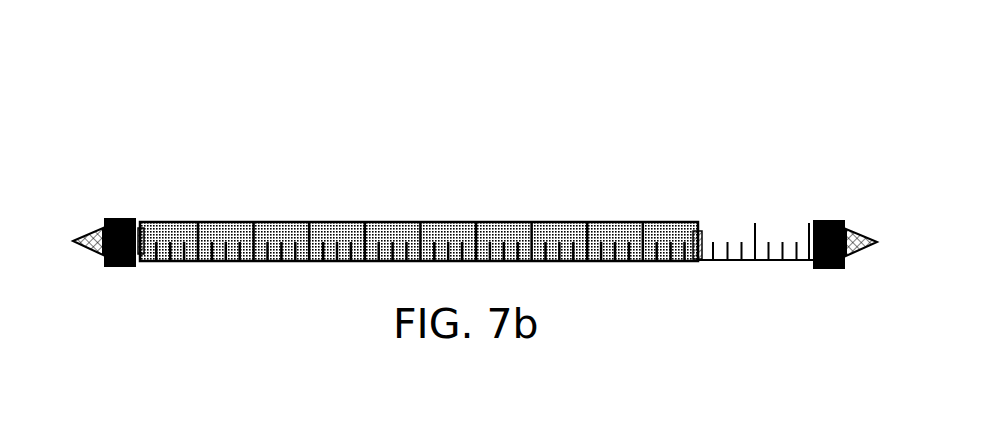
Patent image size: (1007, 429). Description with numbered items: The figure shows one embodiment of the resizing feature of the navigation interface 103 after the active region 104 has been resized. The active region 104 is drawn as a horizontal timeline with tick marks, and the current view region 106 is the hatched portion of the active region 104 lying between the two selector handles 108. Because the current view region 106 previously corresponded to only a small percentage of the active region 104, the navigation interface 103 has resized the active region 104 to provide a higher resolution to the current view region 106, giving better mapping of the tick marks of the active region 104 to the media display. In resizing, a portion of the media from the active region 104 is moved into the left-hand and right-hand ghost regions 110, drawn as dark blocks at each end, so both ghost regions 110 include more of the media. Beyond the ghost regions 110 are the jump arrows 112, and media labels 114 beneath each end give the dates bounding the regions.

The navigation interface 103 is at (140, 66).
The active region 104 is at (737, 259).
The current view region 106 is at (389, 222).
The selector handles 108 is at (150, 248).
The ghost regions 110 is at (118, 219).
The jump arrows 112 is at (86, 248).
The media labels 114 is at (107, 338).